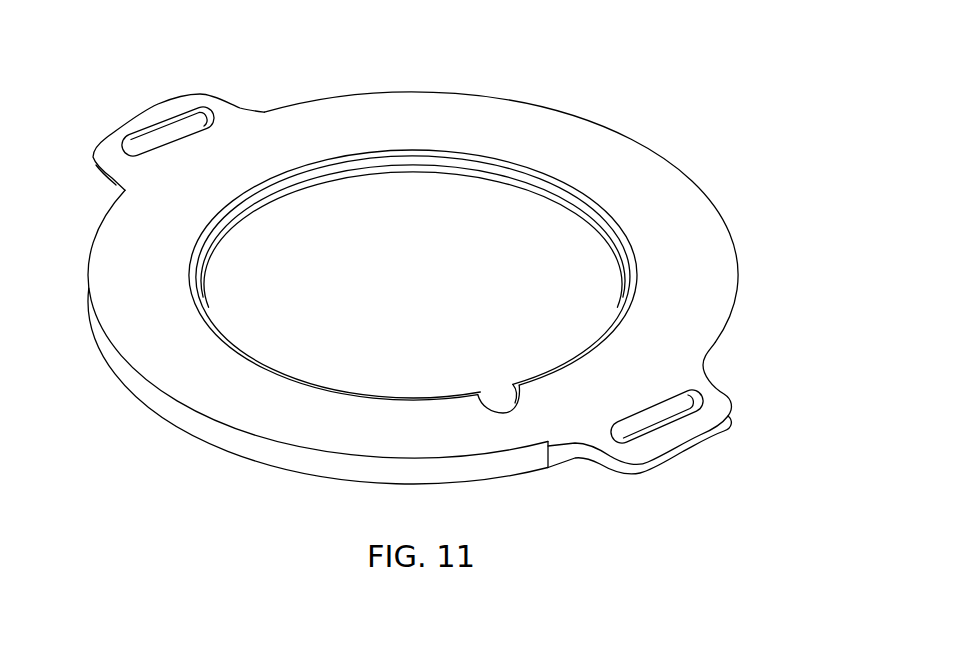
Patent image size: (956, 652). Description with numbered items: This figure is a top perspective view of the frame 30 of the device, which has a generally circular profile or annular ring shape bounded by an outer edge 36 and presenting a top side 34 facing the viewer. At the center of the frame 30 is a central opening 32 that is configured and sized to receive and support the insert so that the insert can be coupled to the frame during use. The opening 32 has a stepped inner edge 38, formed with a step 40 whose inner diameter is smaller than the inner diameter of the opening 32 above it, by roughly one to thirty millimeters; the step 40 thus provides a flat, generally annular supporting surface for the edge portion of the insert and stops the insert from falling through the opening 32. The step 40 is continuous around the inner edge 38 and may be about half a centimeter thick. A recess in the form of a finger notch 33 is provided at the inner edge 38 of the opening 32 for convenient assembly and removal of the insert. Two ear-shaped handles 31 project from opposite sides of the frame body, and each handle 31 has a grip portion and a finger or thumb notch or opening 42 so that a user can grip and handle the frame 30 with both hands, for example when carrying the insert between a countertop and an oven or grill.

The frame 30 is at (723, 70).
The handle 31 is at (145, 120).
The central opening 32 is at (422, 252).
The finger notch 33 is at (507, 410).
The top side 34 is at (343, 112).
The outer edge 36 is at (223, 440).
The stepped inner edge 38 is at (217, 323).
The step 40 is at (617, 310).
The finger/thumb notch or opening 42 is at (173, 120).